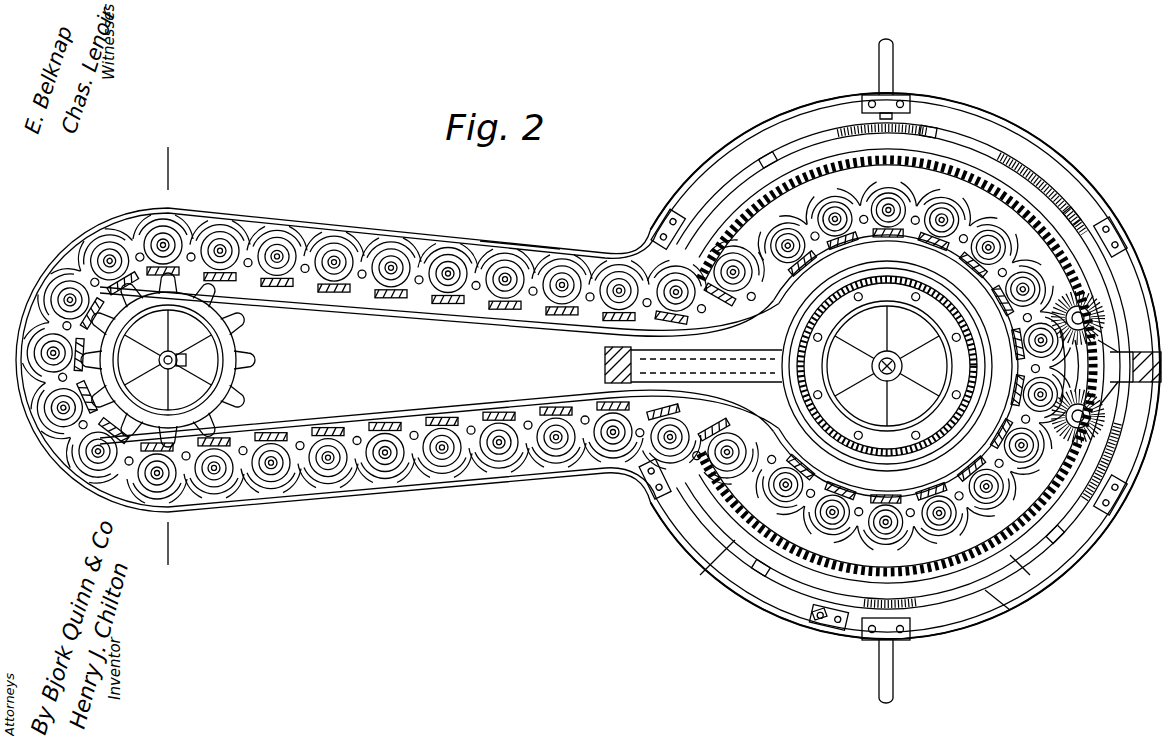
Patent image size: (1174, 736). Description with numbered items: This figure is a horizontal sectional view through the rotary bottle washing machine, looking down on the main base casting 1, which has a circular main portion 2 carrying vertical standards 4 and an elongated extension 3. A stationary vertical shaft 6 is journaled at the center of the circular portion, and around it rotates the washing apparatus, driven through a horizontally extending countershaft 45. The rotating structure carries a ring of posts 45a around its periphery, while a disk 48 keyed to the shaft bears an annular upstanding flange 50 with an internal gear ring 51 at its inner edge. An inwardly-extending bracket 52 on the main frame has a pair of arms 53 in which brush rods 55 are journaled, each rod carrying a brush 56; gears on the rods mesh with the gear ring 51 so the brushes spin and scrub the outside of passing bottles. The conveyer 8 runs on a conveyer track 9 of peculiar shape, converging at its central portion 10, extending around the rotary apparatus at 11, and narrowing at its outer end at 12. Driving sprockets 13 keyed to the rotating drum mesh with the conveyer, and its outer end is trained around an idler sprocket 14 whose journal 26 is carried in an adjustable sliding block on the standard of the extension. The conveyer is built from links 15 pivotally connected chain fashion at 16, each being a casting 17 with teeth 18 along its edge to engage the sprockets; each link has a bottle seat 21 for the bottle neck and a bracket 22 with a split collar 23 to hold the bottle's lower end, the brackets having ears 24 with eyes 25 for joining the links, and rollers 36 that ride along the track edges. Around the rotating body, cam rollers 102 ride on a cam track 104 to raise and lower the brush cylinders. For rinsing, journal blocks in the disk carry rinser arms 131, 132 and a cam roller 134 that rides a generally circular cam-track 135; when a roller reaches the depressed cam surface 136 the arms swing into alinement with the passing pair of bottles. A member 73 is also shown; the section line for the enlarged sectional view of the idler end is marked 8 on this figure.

The main base casting 1 is at (526, 247).
The circular main portion 2 is at (778, 124).
The elongated extension 3 is at (298, 240).
The vertical standards 4 is at (604, 362).
The vertical shaft 6 is at (892, 358).
The conveyer 8 is at (168, 568).
The conveyer track 9 is at (466, 314).
The converging central portion of track 10 is at (642, 262).
The track portion around washing apparatus 11 is at (722, 566).
The narrow outer end of track 12 is at (128, 478).
The sprockets 13 is at (715, 228).
The idler sprocket 14 is at (514, 409).
The links 15 is at (392, 260).
The pivotal connection 16 is at (552, 262).
The casting 17 is at (507, 320).
The teeth 18 is at (451, 413).
The bottle seat 21 is at (446, 268).
The bracket 22 is at (500, 414).
The split collar 23 is at (503, 262).
The ear 24 is at (322, 258).
The eye 25 is at (302, 246).
The journal 26 is at (72, 290).
The roller 36 is at (402, 328).
The countershaft 45 is at (895, 660).
The posts 45a is at (942, 128).
The disk 48 is at (1000, 598).
The annular upstanding flange 50 is at (790, 588).
The internal gear ring 51 is at (806, 608).
The bracket 52 is at (1132, 368).
The arms 53 is at (1098, 340).
The brush rod 55 is at (1104, 287).
The brush 56 is at (1086, 332).
The upper shaft 73 is at (896, 67).
The cam roller 102 is at (1073, 215).
The cam track 104 is at (1020, 562).
The rinser arm 131 is at (965, 503).
The rinser arm 132 is at (875, 522).
The cam roller 134 is at (880, 285).
The cam-track 135 is at (897, 374).
The depressed cam surface 136 is at (858, 428).